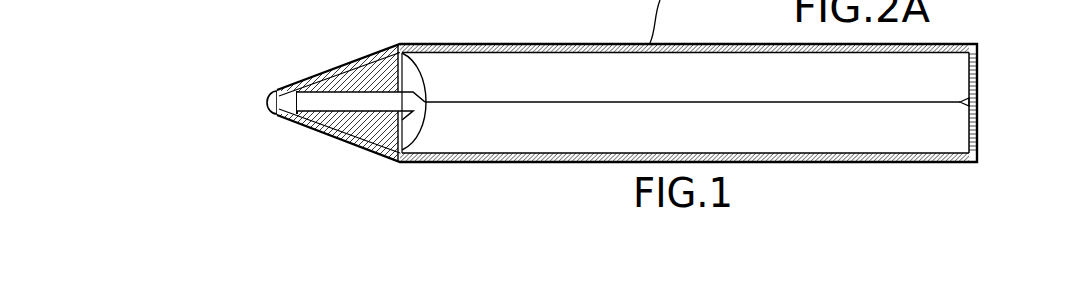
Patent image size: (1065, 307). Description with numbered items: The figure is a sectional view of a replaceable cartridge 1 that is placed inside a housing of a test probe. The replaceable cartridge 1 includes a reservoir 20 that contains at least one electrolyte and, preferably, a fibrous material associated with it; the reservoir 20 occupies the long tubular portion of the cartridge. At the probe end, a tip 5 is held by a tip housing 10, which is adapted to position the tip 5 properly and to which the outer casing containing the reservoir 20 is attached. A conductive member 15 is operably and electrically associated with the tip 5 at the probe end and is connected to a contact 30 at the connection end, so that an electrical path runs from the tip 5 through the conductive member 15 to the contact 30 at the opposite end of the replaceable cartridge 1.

The replaceable cartridge 1 is at (447, 160).
The tip 5 is at (292, 102).
The tip housing 10 is at (347, 123).
The conductive member 15 is at (400, 45).
The reservoir 20 is at (488, 72).
The contact 30 is at (978, 82).